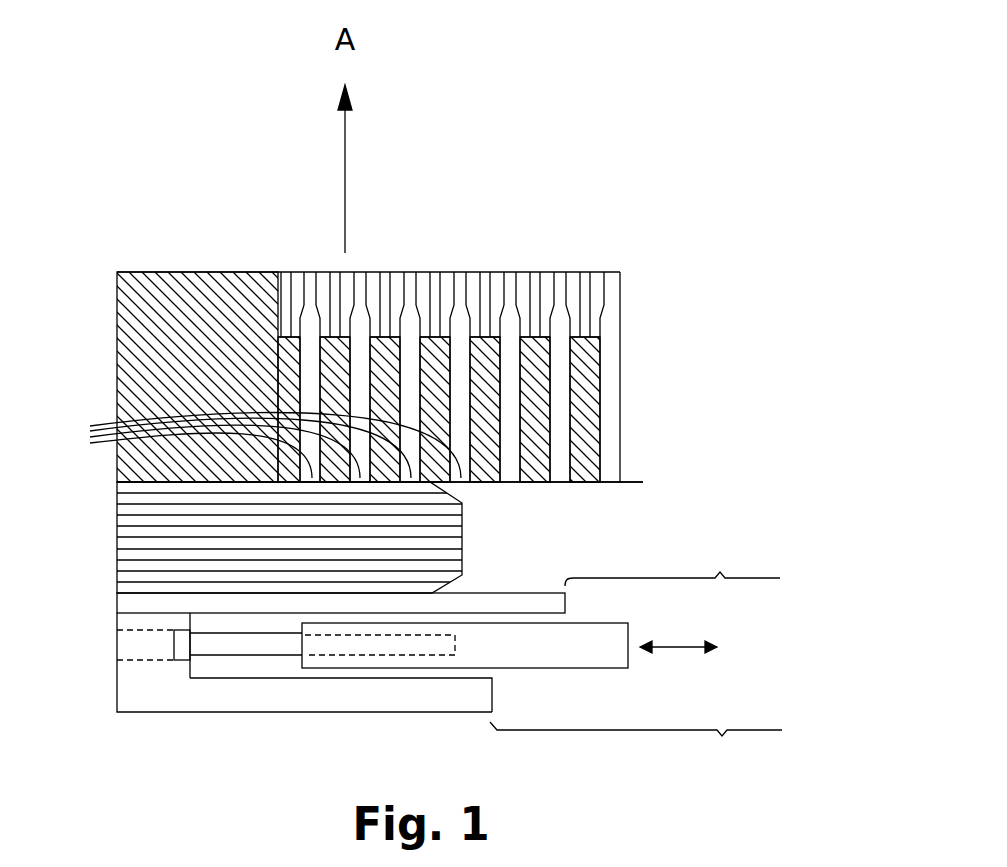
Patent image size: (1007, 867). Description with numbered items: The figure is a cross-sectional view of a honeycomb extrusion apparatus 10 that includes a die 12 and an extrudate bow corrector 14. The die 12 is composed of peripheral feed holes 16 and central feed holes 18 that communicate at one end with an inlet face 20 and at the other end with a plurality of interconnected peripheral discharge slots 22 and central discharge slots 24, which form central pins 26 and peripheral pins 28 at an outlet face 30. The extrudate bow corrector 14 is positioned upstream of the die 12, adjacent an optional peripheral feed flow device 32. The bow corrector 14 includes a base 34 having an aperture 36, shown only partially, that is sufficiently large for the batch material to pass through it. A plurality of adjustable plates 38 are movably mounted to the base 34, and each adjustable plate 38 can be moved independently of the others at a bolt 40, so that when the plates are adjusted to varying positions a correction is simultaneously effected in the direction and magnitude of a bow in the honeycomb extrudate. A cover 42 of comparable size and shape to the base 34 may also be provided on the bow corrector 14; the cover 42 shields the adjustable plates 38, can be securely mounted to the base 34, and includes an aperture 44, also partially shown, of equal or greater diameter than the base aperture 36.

The honeycomb extrusion apparatus 10 is at (125, 43).
The die 12 is at (621, 388).
The extrudate bow corrector 14 is at (117, 684).
The peripheral feed holes 16 is at (262, 445).
The central feed holes 18 is at (610, 460).
The inlet face 20 is at (612, 483).
The peripheral discharge slots 22 is at (312, 272).
The central discharge slots 24 is at (410, 272).
The central pins 26 is at (450, 272).
The peripheral pins 28 is at (330, 273).
The outlet face 30 is at (150, 272).
The peripheral feed flow device 32 is at (117, 568).
The base 34 is at (380, 700).
The aperture 36 is at (636, 746).
The adjustable plates 38 is at (540, 657).
The bolt 40 is at (197, 647).
The cover 42 is at (565, 598).
The aperture 44 is at (672, 565).